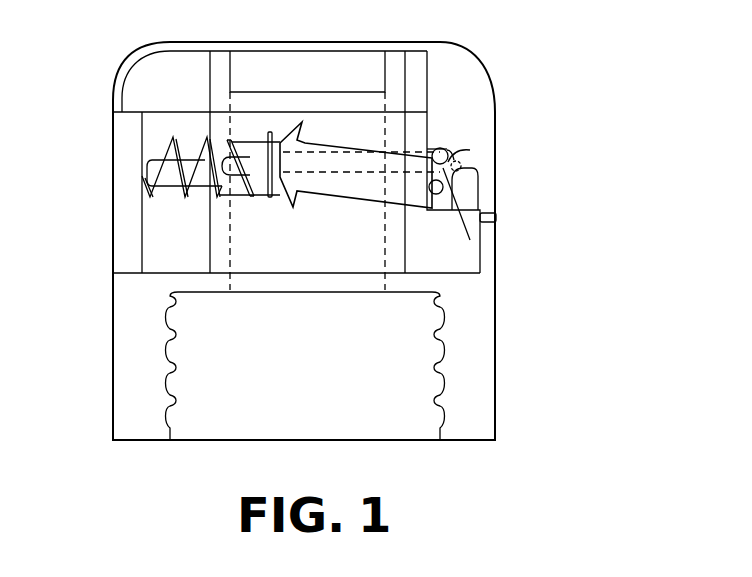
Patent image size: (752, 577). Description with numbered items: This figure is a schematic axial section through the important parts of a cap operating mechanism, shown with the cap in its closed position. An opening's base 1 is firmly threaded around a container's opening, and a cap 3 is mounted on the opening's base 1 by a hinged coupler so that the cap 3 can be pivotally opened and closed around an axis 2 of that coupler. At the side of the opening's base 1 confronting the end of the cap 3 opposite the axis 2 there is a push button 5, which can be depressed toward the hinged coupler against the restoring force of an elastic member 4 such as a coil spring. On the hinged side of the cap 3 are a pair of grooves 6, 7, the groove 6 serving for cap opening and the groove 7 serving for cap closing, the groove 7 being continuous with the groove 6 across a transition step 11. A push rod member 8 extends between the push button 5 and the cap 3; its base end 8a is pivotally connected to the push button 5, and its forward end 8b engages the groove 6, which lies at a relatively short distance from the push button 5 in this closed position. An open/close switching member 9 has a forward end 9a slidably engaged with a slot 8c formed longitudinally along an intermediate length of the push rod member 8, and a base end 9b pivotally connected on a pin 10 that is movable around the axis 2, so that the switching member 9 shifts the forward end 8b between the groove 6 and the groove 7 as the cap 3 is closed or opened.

The opening's base 1 is at (482, 411).
The axis 2 is at (466, 152).
The cap 3 is at (305, 50).
The elastic member 4 is at (208, 135).
The push button 5 is at (120, 238).
The groove serving for cap opening 6 is at (462, 150).
The groove serving for cap closing 7 is at (470, 186).
The push rod member 8 is at (401, 150).
The base end 8a is at (145, 178).
The forward end 8b is at (443, 148).
The slot 8c is at (234, 197).
The open/close switching member 9 is at (328, 195).
The forward end 9a is at (271, 200).
The base end 9b is at (437, 196).
The pin 10 is at (452, 208).
The transition step 11 is at (497, 216).